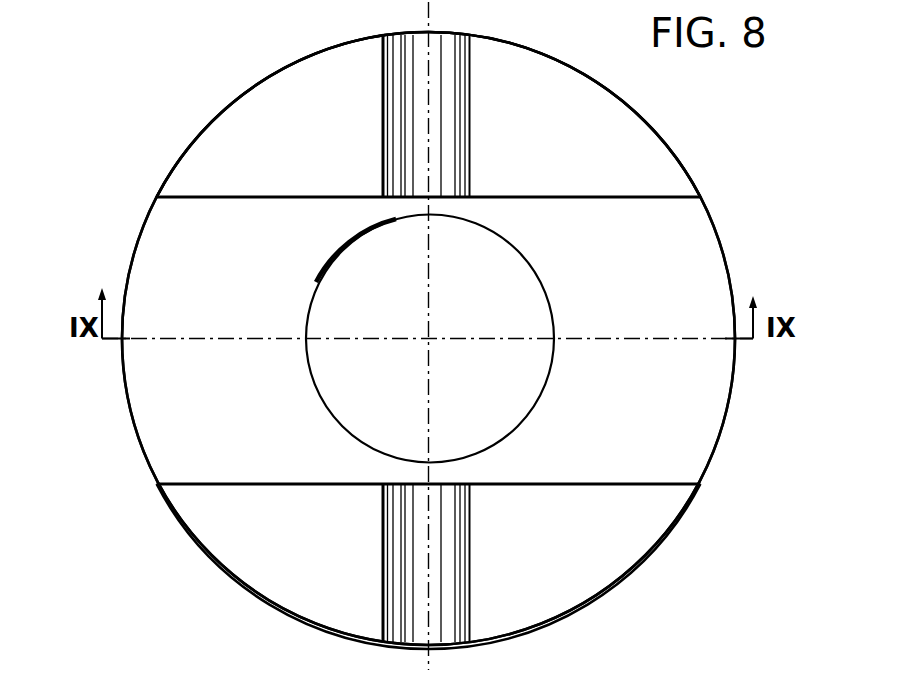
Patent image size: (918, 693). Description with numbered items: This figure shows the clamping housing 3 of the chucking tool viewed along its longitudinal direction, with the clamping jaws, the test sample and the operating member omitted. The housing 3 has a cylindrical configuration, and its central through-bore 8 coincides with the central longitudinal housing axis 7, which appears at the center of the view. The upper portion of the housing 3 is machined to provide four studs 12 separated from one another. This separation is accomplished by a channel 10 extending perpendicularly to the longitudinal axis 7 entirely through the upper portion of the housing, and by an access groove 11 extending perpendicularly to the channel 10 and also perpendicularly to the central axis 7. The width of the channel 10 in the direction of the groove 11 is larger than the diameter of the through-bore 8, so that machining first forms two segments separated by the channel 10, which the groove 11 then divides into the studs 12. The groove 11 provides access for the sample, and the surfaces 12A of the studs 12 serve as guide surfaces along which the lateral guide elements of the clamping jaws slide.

The clamping housing 3 is at (672, 433).
The central housing axis 7 is at (430, 337).
The central bore 8 is at (308, 308).
The channel 10 is at (697, 267).
The access groove 11 is at (450, 133).
The studs 12 is at (255, 118).
The surfaces of the studs 12A is at (238, 198).